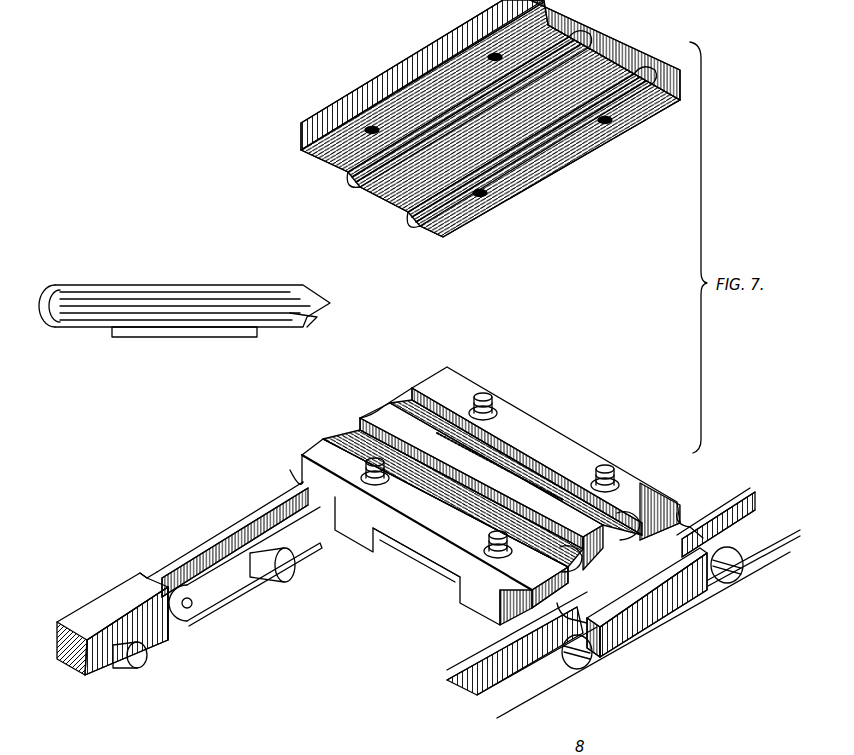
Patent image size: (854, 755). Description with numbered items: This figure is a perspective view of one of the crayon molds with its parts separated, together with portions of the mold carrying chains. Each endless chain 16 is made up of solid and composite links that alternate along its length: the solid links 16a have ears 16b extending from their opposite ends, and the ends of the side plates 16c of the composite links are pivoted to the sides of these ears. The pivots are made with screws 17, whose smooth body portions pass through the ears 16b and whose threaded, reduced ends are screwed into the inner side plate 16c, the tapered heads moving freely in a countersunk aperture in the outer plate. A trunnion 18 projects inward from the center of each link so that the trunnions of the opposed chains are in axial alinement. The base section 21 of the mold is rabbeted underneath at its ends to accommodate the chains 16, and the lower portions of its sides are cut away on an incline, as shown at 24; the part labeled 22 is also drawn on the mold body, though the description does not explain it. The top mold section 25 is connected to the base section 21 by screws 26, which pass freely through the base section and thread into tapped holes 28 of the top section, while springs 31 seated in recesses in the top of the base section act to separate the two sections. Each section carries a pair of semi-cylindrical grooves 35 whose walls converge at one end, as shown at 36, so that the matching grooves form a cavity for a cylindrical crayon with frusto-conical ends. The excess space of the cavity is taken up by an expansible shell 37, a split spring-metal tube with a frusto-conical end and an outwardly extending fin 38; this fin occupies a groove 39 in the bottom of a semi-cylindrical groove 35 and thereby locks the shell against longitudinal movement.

The endless chain 16 is at (122, 573).
The solid link 16a is at (150, 642).
The ear 16b is at (703, 517).
The side plate 16c is at (243, 508).
The screw 17 is at (592, 660).
The trunnion 18 is at (140, 670).
The base section 21 is at (580, 450).
The clamp block 22 is at (487, 613).
The inclined cut-away portion 24 is at (437, 582).
The top mold section 25 is at (567, 160).
The screw 26 is at (362, 462).
The tapped hole 28 is at (612, 125).
The spring 31 is at (470, 402).
The semi-cylindrical groove 35 is at (423, 140).
The converging groove end 36 is at (585, 40).
The expansible shell 37 is at (192, 290).
The fin 38 is at (198, 333).
The groove 39 is at (485, 450).